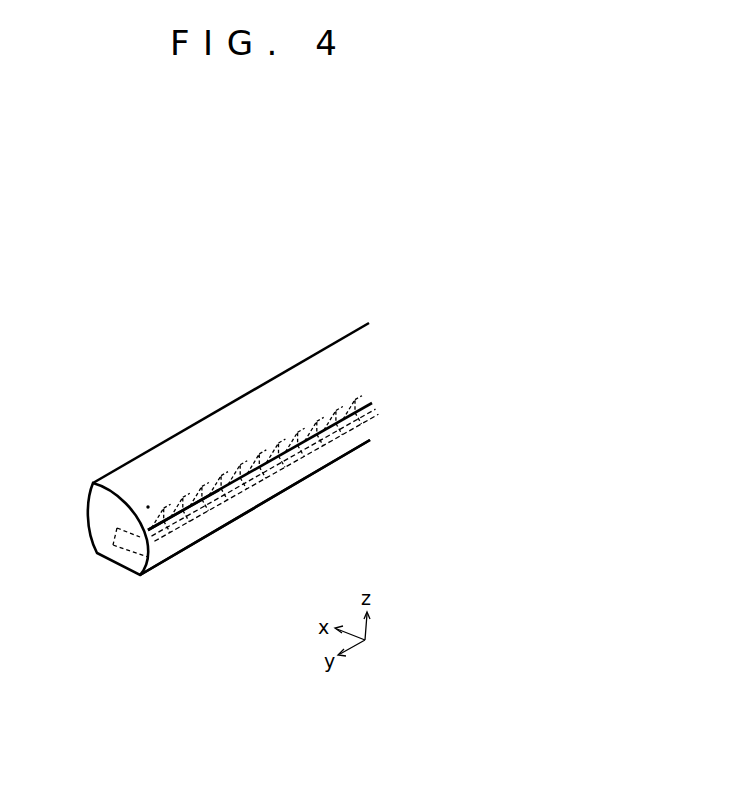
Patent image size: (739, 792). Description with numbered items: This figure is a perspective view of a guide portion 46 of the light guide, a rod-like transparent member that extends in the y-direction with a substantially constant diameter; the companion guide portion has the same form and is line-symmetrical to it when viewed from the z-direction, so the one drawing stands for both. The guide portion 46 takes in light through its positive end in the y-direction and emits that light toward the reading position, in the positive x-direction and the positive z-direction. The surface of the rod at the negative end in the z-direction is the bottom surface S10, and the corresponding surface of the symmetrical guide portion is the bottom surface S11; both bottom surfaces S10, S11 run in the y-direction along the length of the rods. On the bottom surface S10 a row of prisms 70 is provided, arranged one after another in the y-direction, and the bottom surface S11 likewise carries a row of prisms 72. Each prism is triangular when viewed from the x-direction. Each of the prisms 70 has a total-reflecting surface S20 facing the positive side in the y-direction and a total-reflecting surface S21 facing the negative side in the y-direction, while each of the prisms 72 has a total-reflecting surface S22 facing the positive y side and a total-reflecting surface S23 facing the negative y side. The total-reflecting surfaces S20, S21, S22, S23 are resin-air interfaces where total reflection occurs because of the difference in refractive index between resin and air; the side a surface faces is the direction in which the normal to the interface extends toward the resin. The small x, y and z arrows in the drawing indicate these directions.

The guide portion 46 is at (190, 390).
The total-reflecting surface S21 is at (260, 407).
The total-reflecting surface S23 is at (278, 457).
The prisms 70 is at (304, 440).
The prisms 72 is at (343, 400).
The total-reflecting surface S20 is at (132, 457).
The total-reflecting surface S22 is at (219, 498).
The bottom surface S10 is at (306, 507).
The bottom surface S11 is at (313, 473).